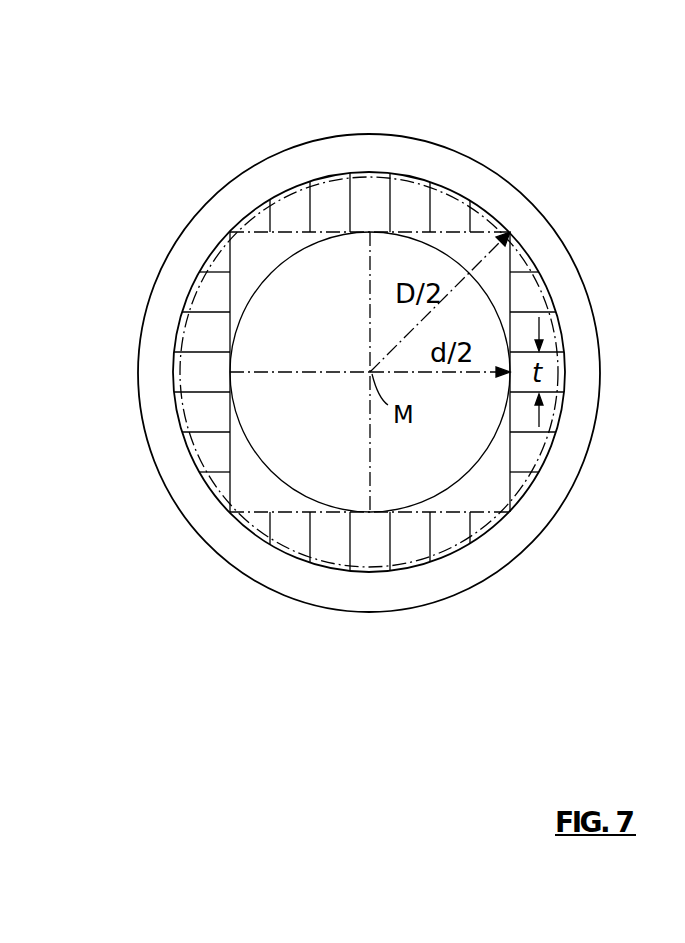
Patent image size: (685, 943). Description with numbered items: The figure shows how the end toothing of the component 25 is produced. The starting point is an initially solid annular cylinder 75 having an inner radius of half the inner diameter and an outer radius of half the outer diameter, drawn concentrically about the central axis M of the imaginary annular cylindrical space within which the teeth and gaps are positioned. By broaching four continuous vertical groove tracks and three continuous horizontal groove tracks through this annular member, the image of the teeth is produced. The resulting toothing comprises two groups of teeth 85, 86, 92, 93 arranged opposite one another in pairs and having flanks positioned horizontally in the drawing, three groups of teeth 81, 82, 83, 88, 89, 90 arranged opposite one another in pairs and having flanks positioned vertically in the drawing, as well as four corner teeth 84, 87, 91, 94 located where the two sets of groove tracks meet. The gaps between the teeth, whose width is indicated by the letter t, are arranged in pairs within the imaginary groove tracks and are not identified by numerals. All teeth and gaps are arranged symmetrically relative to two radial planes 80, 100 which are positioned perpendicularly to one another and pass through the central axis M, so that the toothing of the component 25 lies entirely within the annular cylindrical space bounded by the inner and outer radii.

The component 25 is at (222, 187).
The annular cylinder 75 is at (493, 212).
The radial plane 80 is at (370, 307).
The radial plane 100 is at (272, 375).
The tooth 81 is at (283, 213).
The tooth 82 is at (370, 182).
The tooth 83 is at (453, 203).
The corner tooth 84 is at (523, 258).
The tooth 85 is at (557, 333).
The tooth 86 is at (557, 417).
The corner tooth 87 is at (520, 492).
The tooth 88 is at (448, 545).
The tooth 89 is at (368, 558).
The tooth 90 is at (293, 547).
The corner tooth 91 is at (225, 495).
The tooth 92 is at (203, 417).
The tooth 93 is at (183, 337).
The corner tooth 94 is at (213, 253).